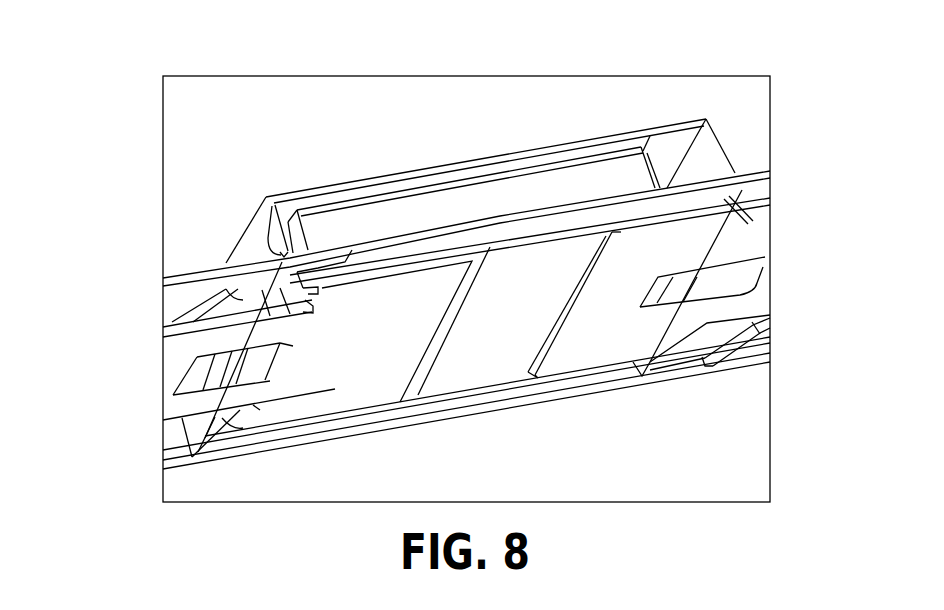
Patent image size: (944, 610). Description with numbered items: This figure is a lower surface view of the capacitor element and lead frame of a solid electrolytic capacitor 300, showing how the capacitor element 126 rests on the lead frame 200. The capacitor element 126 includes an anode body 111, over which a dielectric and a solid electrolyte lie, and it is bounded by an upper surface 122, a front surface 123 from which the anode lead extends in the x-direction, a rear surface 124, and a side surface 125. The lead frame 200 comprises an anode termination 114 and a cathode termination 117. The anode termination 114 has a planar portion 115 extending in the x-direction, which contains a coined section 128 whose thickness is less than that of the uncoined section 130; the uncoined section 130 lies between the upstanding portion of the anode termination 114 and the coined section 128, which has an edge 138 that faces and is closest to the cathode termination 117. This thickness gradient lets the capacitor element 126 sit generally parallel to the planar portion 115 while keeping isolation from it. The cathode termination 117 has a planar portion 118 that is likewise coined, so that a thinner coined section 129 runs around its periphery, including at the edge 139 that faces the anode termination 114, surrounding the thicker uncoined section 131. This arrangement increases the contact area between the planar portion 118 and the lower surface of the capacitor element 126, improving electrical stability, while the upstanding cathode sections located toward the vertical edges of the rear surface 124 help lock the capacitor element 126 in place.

The capacitor 300 is at (123, 80).
The anode body 111 is at (408, 128).
The upper surface 122 is at (548, 144).
The front surface 123 is at (650, 167).
The rear surface 124 is at (277, 227).
The side surface 125 is at (492, 212).
The capacitor element 126 is at (470, 132).
The anode termination 114 is at (750, 205).
The uncoined section 130 is at (680, 217).
The coined section 128 is at (620, 235).
The planar portion 115 is at (600, 310).
The edge 138 is at (560, 322).
The edge 139 is at (447, 333).
The coined section 129 is at (435, 352).
The uncoined section 131 is at (405, 368).
The planar portion 118 is at (307, 403).
The cathode termination 117 is at (237, 433).
The lead frame 200 is at (180, 408).